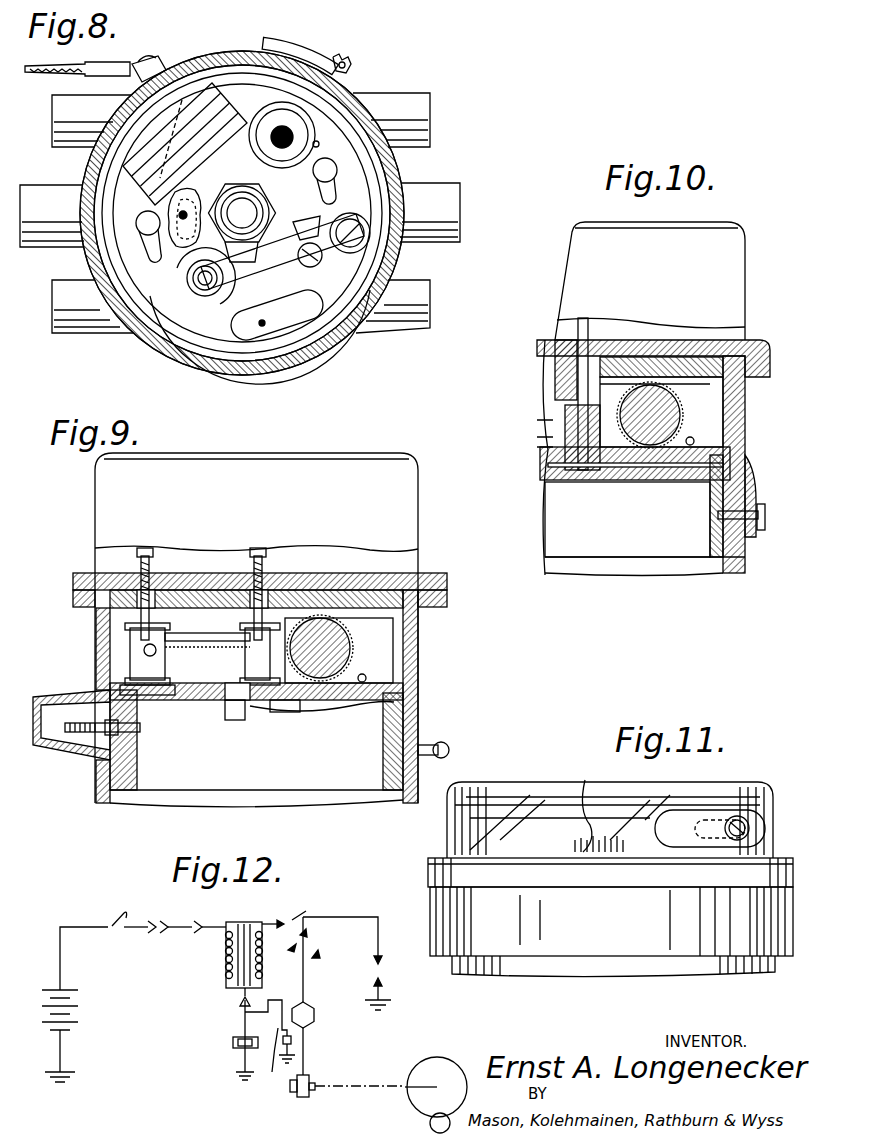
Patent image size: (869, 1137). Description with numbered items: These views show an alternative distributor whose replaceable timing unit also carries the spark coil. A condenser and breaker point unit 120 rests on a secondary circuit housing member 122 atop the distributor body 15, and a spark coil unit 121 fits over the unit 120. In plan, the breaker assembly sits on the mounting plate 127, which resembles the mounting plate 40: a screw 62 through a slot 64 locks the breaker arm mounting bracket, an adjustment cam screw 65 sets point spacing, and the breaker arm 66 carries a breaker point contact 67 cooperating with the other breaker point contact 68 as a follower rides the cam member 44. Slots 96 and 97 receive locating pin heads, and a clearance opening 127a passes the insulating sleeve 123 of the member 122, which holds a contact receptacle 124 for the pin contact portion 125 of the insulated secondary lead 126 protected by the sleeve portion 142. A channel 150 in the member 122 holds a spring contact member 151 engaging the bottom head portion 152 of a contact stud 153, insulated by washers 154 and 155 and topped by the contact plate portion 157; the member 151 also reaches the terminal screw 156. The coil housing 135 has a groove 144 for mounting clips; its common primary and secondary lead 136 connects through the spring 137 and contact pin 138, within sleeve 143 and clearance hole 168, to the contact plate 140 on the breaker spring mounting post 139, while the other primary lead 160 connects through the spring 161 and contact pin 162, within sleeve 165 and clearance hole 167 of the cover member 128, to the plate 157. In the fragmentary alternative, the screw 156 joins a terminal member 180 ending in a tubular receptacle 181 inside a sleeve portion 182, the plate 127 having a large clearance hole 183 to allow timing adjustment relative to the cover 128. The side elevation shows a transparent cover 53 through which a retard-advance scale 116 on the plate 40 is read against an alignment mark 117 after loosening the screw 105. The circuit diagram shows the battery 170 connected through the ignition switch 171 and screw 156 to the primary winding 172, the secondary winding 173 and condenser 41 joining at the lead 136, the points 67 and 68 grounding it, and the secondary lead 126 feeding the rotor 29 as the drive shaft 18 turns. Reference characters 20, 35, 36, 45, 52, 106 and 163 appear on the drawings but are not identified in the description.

In FIG. 9, the distributor body 15 is at (97, 796).
In FIG. 10, the distributor body 15 is at (747, 576).
In FIG. 11, the distributor body 15 is at (456, 972).
In FIG. 12, the distributor drive shaft 18 is at (306, 1004).
In FIG. 11, the housing body 20 is at (428, 922).
In FIG. 12, the rotor 29 is at (316, 925).
In FIG. 9, the shaft 35 is at (65, 727).
In FIG. 8, the mounting lug 36 is at (62, 284).
In FIG. 9, the mounting lug 36 is at (40, 752).
In FIG. 11, the mounting plate 40 is at (448, 856).
In FIG. 8, the condenser 41 is at (143, 157).
In FIG. 9, the condenser 41 is at (350, 648).
In FIG. 10, the condenser 41 is at (672, 406).
In FIG. 12, the condenser 41 is at (235, 1046).
In FIG. 8, the cam member 44 is at (297, 193).
In FIG. 8, the cam nut 45 is at (242, 213).
In FIG. 11, the ring 52 is at (430, 882).
In FIG. 11, the cover 53 is at (486, 800).
In FIG. 8, the screw 62 is at (360, 232).
In FIG. 8, the slot 64 is at (372, 304).
In FIG. 8, the adjustment cam screw 65 is at (298, 283).
In FIG. 8, the breaker arm 66 is at (258, 270).
In FIG. 12, the breaker arm 66 is at (270, 1036).
In FIG. 8, the breaker point contact 67 is at (318, 264).
In FIG. 12, the breaker point contact 67 is at (297, 1086).
In FIG. 8, the breaker point contact 68 is at (356, 216).
In FIG. 12, the breaker point contact 68 is at (292, 1040).
In FIG. 8, the slot 96 is at (148, 236).
In FIG. 8, the slot 97 is at (337, 178).
In FIG. 8, the screw 105 is at (351, 67).
In FIG. 11, the screw 105 is at (742, 815).
In FIG. 8, the bracket 106 is at (296, 48).
In FIG. 11, the bracket 106 is at (690, 812).
In FIG. 11, the retard-advance scale 116 is at (569, 805).
In FIG. 11, the alignment mark 117 is at (600, 840).
In FIG. 8, the condenser and breaker point unit 120 is at (404, 178).
In FIG. 9, the condenser and breaker point unit 120 is at (421, 645).
In FIG. 10, the condenser and breaker point unit 120 is at (750, 420).
In FIG. 9, the spark coil unit 121 is at (421, 515).
In FIG. 10, the spark coil unit 121 is at (746, 298).
In FIG. 9, the secondary circuit housing member 122 is at (422, 718).
In FIG. 10, the secondary circuit housing member 122 is at (748, 485).
In FIG. 8, the upstanding sleeve 123 is at (228, 105).
In FIG. 12, the contact receptacle 124 is at (294, 923).
In FIG. 8, the pin contact portion 125 is at (270, 166).
In FIG. 12, the pin contact portion 125 is at (274, 918).
In FIG. 8, the insulated secondary lead 126 is at (300, 136).
In FIG. 12, the insulated secondary lead 126 is at (262, 922).
In FIG. 9, the mounting plate 127 is at (368, 683).
In FIG. 10, the mounting plate 127 is at (696, 447).
In FIG. 8, the clearance opening 127a is at (313, 148).
In FIG. 8, the cover member 128 is at (157, 347).
In FIG. 9, the cover member 128 is at (419, 610).
In FIG. 10, the cover member 128 is at (746, 392).
In FIG. 9, the housing 135 is at (95, 572).
In FIG. 9, the common primary and secondary lead 136 is at (152, 562).
In FIG. 12, the common primary and secondary lead 136 is at (252, 992).
In FIG. 9, the spring 137 is at (142, 565).
In FIG. 8, the contact pin 138 is at (261, 327).
In FIG. 9, the contact pin 138 is at (128, 640).
In FIG. 12, the contact pin 138 is at (240, 1000).
In FIG. 9, the breaker spring mounting post 139 is at (155, 665).
In FIG. 8, the contact plate 140 is at (304, 312).
In FIG. 9, the contact plate 140 is at (128, 660).
In FIG. 12, the contact plate 140 is at (242, 1012).
In FIG. 8, the sleeve portion 142 is at (283, 126).
In FIG. 9, the sleeve 143 is at (110, 614).
In FIG. 9, the groove 144 is at (424, 578).
In FIG. 10, the groove 144 is at (762, 340).
In FIG. 9, the channel 150 is at (404, 690).
In FIG. 8, the spring contact member 151 is at (110, 177).
In FIG. 9, the spring contact member 151 is at (322, 712).
In FIG. 12, the spring contact member 151 is at (124, 932).
In FIG. 9, the bottom head portion 152 is at (237, 722).
In FIG. 12, the bottom head portion 152 is at (153, 920).
In FIG. 9, the contact stud 153 is at (240, 649).
In FIG. 9, the insulating washer 154 is at (256, 679).
In FIG. 9, the insulating washer 155 is at (282, 715).
In FIG. 8, the terminal screw 156 is at (160, 62).
In FIG. 9, the terminal screw 156 is at (441, 743).
In FIG. 10, the terminal screw 156 is at (745, 528).
In FIG. 8, the top contact plate portion 157 is at (180, 215).
In FIG. 9, the top contact plate portion 157 is at (320, 648).
In FIG. 12, the top contact plate portion 157 is at (162, 933).
In FIG. 9, the primary lead 160 is at (264, 565).
In FIG. 10, the primary lead 160 is at (590, 324).
In FIG. 12, the primary lead 160 is at (226, 948).
In FIG. 9, the spring 161 is at (253, 565).
In FIG. 8, the contact pin 162 is at (182, 250).
In FIG. 9, the contact pin 162 is at (272, 590).
In FIG. 12, the contact pin 162 is at (205, 914).
In FIG. 10, the block 163 is at (566, 412).
In FIG. 9, the sleeve 165 is at (232, 589).
In FIG. 10, the sleeve 165 is at (612, 336).
In FIG. 9, the clearance hole 167 is at (320, 590).
In FIG. 10, the clearance hole 167 is at (555, 366).
In FIG. 9, the clearance hole 168 is at (172, 590).
In FIG. 12, the battery 170 is at (78, 1012).
In FIG. 12, the ignition switch 171 is at (109, 924).
In FIG. 12, the primary winding 172 is at (225, 965).
In FIG. 12, the secondary winding 173 is at (262, 958).
In FIG. 10, the terminal member 180 is at (655, 487).
In FIG. 10, the tubular receptacle 181 is at (595, 480).
In FIG. 10, the sleeve portion 182 is at (565, 440).
In FIG. 10, the large clearance hole 183 is at (650, 415).